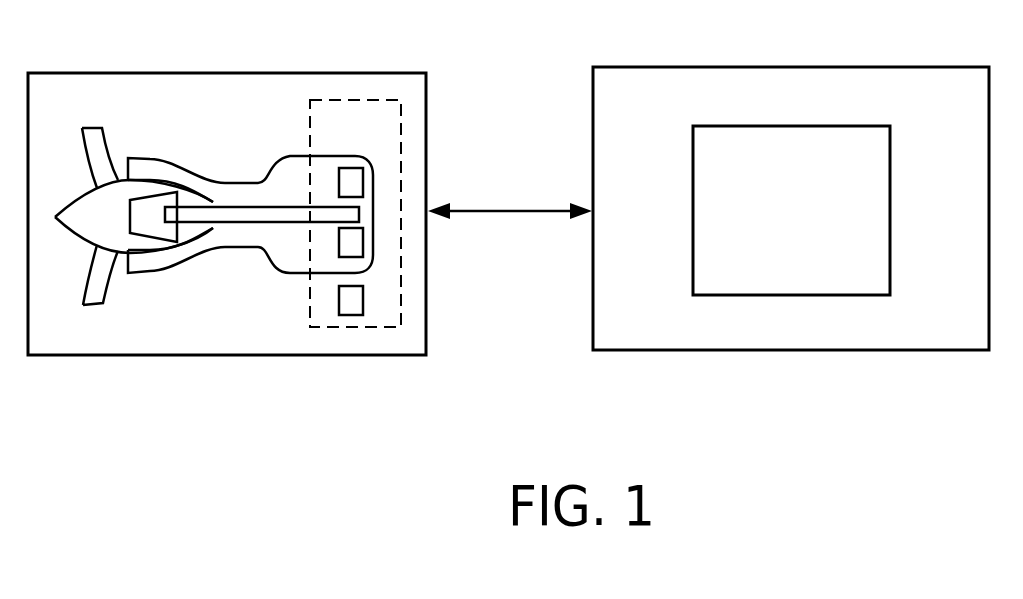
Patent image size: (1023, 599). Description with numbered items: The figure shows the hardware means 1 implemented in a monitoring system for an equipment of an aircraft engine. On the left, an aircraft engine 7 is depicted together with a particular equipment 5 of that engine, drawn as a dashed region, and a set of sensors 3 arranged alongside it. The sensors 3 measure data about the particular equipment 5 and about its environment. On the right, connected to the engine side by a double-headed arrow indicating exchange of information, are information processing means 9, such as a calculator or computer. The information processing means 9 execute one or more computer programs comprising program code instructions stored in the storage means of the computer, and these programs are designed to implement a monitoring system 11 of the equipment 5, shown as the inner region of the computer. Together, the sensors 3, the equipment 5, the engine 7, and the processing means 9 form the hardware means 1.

The hardware means 1 is at (488, 400).
The sensors 3 is at (360, 177).
The equipment 5 is at (347, 100).
The aircraft engine 7 is at (188, 272).
The information processing means 9 is at (783, 350).
The monitoring system 11 is at (893, 212).